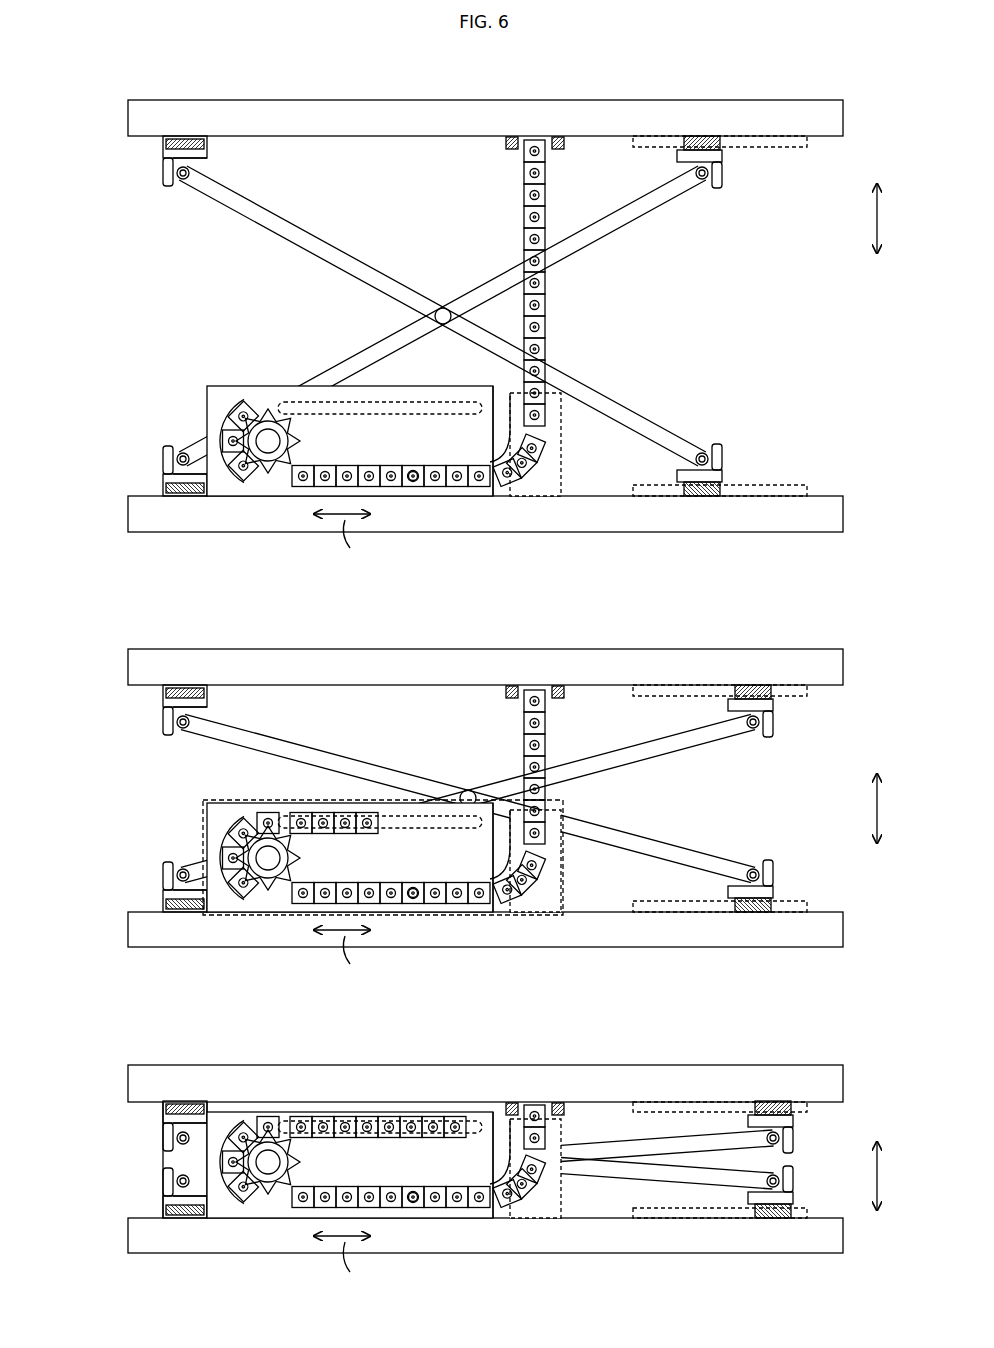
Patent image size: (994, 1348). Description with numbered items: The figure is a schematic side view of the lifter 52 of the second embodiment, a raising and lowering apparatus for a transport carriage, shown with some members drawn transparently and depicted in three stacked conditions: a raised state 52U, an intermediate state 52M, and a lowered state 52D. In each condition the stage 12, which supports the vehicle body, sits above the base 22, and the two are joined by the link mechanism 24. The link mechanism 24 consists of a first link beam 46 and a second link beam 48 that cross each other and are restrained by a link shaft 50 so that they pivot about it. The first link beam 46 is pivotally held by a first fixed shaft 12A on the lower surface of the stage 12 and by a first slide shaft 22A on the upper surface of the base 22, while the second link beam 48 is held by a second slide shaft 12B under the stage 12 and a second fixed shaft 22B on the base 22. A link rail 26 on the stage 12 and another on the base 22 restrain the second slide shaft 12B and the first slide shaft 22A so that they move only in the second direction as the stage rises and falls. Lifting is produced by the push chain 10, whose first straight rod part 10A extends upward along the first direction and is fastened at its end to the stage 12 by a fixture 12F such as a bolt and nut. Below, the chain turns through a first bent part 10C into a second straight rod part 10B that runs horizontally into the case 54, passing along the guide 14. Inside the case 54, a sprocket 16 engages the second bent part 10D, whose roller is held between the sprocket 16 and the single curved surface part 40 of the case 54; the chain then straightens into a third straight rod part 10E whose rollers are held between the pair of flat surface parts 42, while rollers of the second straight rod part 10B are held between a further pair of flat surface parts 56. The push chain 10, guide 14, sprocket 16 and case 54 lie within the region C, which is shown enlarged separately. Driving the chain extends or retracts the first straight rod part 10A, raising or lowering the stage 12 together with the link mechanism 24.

The push chain 10 is at (352, 715).
The first straight rod part 10A is at (548, 316).
The second straight rod part 10B is at (393, 490).
The first bent part 10C is at (527, 482).
The second bent part 10D is at (225, 418).
The third straight rod part 10E is at (290, 812).
The stage 12 is at (128, 117).
The first fixed shaft 12A is at (165, 175).
The second slide shaft 12B is at (722, 173).
The fixture 12F is at (512, 137).
The guide 14 is at (561, 478).
The sprocket 16 is at (302, 441).
The base 22 is at (128, 513).
The first slide shaft 22A is at (722, 460).
The second fixed shaft 22B is at (165, 462).
The link mechanism 24 is at (476, 728).
The link rail 26 is at (658, 136).
The curved surface part 40 is at (236, 460).
The flat surface parts 42 is at (412, 410).
The first link beam 46 is at (338, 243).
The second link beam 48 is at (340, 347).
The link shaft 50 is at (443, 306).
The lifter 52 is at (78, 88).
The raised state 52U is at (862, 162).
The intermediate state 52M is at (862, 710).
The lowered state 52D is at (862, 1125).
The case 54 is at (207, 398).
The flat surface parts 56 is at (408, 470).
The region C is at (563, 866).